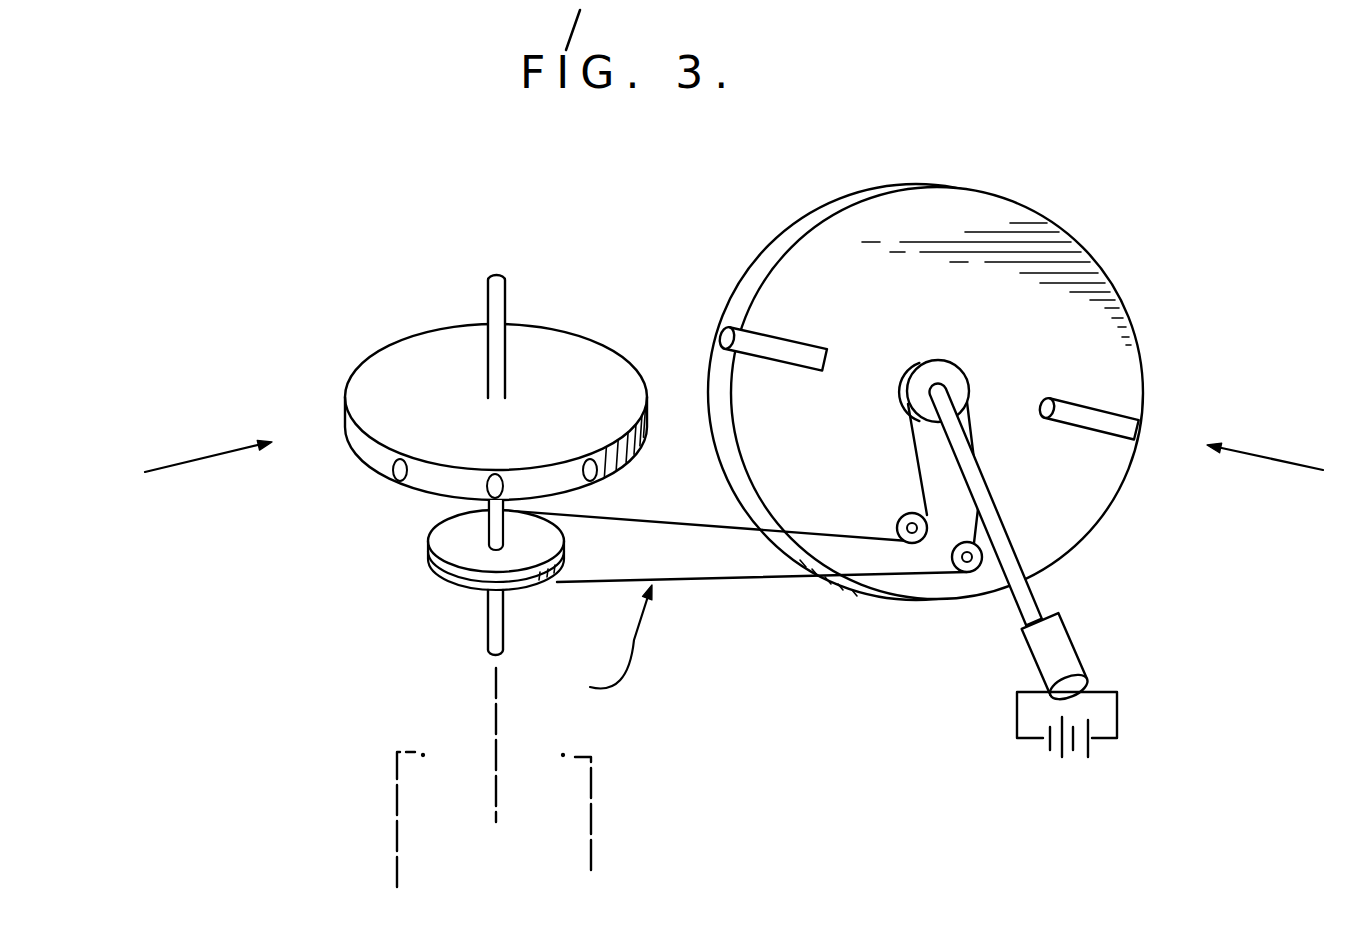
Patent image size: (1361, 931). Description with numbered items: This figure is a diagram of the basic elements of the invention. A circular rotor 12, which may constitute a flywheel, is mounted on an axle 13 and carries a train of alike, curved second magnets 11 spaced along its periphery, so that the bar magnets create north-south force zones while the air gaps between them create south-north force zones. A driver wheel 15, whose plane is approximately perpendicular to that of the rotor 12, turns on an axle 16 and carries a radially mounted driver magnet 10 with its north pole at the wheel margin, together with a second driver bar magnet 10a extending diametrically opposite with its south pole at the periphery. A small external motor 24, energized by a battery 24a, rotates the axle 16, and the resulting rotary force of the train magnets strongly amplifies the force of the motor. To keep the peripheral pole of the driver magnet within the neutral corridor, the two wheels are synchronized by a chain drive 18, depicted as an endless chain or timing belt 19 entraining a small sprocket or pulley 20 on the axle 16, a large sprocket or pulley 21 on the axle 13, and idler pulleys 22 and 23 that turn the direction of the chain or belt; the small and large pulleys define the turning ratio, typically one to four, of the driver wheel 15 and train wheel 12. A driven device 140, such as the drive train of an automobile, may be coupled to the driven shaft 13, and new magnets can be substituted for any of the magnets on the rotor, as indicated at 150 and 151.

The driver magnet 10 is at (788, 346).
The second driver bar magnet 10a is at (1090, 407).
The second magnet 11 is at (585, 466).
The rotor 12 is at (383, 382).
The axle 13 is at (487, 627).
The driver wheel 15 is at (970, 190).
The axle 16 is at (1040, 587).
The chain drive 18 is at (602, 646).
The endless chain or timing belt 19 is at (740, 584).
The small sprocket or pulley 20 is at (947, 382).
The large sprocket or pulley 21 is at (447, 542).
The idler pulley 22 is at (898, 516).
The idler pulley 23 is at (952, 560).
The external motor 24 is at (1063, 650).
The battery 24a is at (1073, 755).
The driven device 140 is at (390, 820).
The substitute magnet location 150 is at (1293, 463).
The substitute magnet location 151 is at (185, 460).